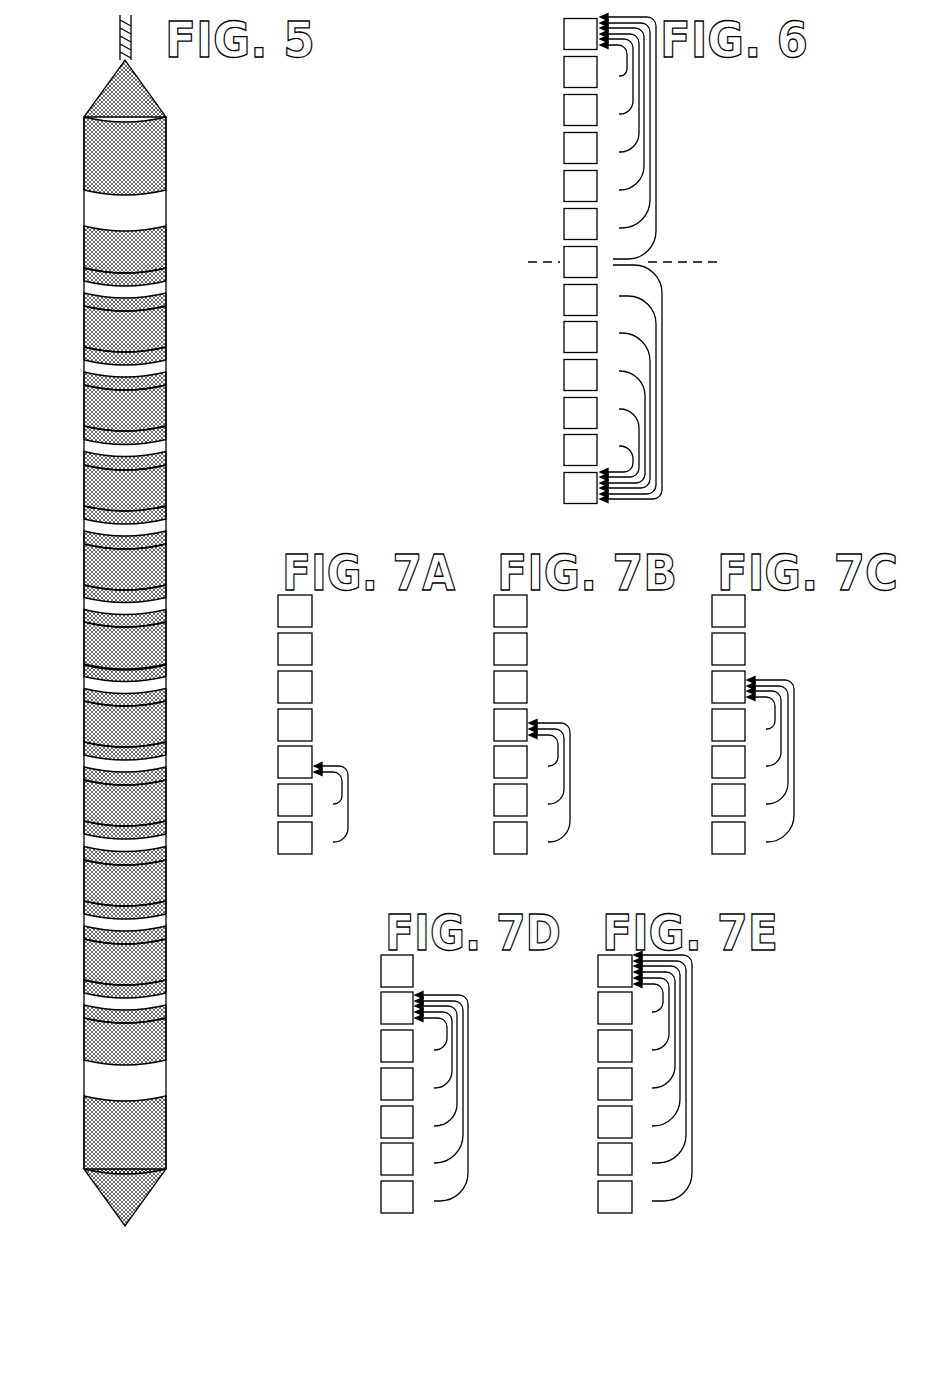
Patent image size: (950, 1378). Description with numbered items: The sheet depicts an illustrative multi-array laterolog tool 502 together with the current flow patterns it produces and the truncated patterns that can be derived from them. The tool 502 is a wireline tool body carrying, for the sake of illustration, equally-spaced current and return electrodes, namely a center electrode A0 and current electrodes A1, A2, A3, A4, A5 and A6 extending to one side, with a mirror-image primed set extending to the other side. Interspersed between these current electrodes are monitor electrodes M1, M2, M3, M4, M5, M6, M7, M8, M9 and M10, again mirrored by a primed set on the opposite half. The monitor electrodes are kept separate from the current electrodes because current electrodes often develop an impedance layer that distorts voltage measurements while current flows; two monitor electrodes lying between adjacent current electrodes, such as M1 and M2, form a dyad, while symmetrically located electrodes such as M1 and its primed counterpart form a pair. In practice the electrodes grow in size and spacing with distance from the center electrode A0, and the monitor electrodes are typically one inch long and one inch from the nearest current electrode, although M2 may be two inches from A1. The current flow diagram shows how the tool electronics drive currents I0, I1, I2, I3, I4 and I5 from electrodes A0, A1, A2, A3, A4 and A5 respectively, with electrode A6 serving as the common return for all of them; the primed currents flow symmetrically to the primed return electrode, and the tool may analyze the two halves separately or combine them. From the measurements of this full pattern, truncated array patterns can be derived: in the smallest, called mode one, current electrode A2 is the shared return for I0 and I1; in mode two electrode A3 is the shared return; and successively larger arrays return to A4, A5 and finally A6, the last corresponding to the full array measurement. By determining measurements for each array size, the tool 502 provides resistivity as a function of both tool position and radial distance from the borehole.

In FIG. 5, the multi-array laterolog tool 502 is at (90, 111).
In FIG. 5, the center electrode A0 is at (163, 644).
In FIG. 6, the center electrode A0 is at (580, 262).
In FIG. 7A, the center electrode A0 is at (295, 838).
In FIG. 7B, the center electrode A0 is at (510, 838).
In FIG. 7C, the center electrode A0 is at (728, 838).
In FIG. 7D, the center electrode A0 is at (397, 1197).
In FIG. 7E, the center electrode A0 is at (615, 1197).
In FIG. 5, the current electrode A1 is at (163, 564).
In FIG. 6, the current electrode A1 is at (580, 224).
In FIG. 7A, the current electrode A1 is at (295, 800).
In FIG. 7B, the current electrode A1 is at (510, 800).
In FIG. 7C, the current electrode A1 is at (728, 800).
In FIG. 7D, the current electrode A1 is at (397, 1159).
In FIG. 7E, the current electrode A1 is at (615, 1159).
In FIG. 5, the current electrode A2 is at (163, 484).
In FIG. 6, the current electrode A2 is at (580, 186).
In FIG. 7A, the current electrode A2 is at (295, 762).
In FIG. 7B, the current electrode A2 is at (510, 762).
In FIG. 7C, the current electrode A2 is at (728, 762).
In FIG. 7D, the current electrode A2 is at (397, 1122).
In FIG. 7E, the current electrode A2 is at (615, 1122).
In FIG. 5, the current electrode A3 is at (163, 404).
In FIG. 6, the current electrode A3 is at (580, 148).
In FIG. 7A, the current electrode A3 is at (295, 725).
In FIG. 7B, the current electrode A3 is at (510, 725).
In FIG. 7C, the current electrode A3 is at (728, 725).
In FIG. 7D, the current electrode A3 is at (397, 1084).
In FIG. 7E, the current electrode A3 is at (615, 1084).
In FIG. 5, the current electrode A4 is at (163, 324).
In FIG. 6, the current electrode A4 is at (580, 110).
In FIG. 7A, the current electrode A4 is at (295, 687).
In FIG. 7B, the current electrode A4 is at (510, 687).
In FIG. 7C, the current electrode A4 is at (728, 687).
In FIG. 7D, the current electrode A4 is at (397, 1046).
In FIG. 7E, the current electrode A4 is at (615, 1046).
In FIG. 5, the current electrode A5 is at (163, 244).
In FIG. 6, the current electrode A5 is at (580, 72).
In FIG. 7A, the current electrode A5 is at (295, 649).
In FIG. 7B, the current electrode A5 is at (510, 649).
In FIG. 7C, the current electrode A5 is at (728, 649).
In FIG. 7D, the current electrode A5 is at (397, 1008).
In FIG. 7E, the current electrode A5 is at (615, 1008).
In FIG. 5, the return electrode A6 is at (163, 164).
In FIG. 6, the return electrode A6 is at (580, 34).
In FIG. 7A, the return electrode A6 is at (295, 611).
In FIG. 7B, the return electrode A6 is at (510, 611).
In FIG. 7C, the return electrode A6 is at (728, 611).
In FIG. 7D, the return electrode A6 is at (397, 971).
In FIG. 7E, the return electrode A6 is at (615, 971).
In FIG. 5, the monitor electrode M1 is at (88, 617).
In FIG. 5, the monitor electrode M2 is at (88, 592).
In FIG. 5, the monitor electrode M3 is at (88, 539).
In FIG. 5, the monitor electrode M4 is at (88, 514).
In FIG. 5, the monitor electrode M5 is at (88, 459).
In FIG. 5, the monitor electrode M6 is at (88, 435).
In FIG. 5, the monitor electrode M7 is at (88, 380).
In FIG. 5, the monitor electrode M8 is at (88, 355).
In FIG. 5, the monitor electrode M9 is at (88, 301).
In FIG. 5, the monitor electrode M10 is at (88, 276).
In FIG. 6, the current I0 is at (628, 138).
In FIG. 7A, the current I0 is at (331, 808).
In FIG. 7B, the current I0 is at (549, 787).
In FIG. 7C, the current I0 is at (770, 765).
In FIG. 7D, the current I0 is at (441, 1102).
In FIG. 7E, the current I0 is at (663, 1082).
In FIG. 6, the current I1 is at (625, 130).
In FIG. 7A, the current I1 is at (328, 792).
In FIG. 7B, the current I1 is at (546, 771).
In FIG. 7C, the current I1 is at (767, 749).
In FIG. 7D, the current I1 is at (439, 1086).
In FIG. 7E, the current I1 is at (660, 1066).
In FIG. 6, the current I2 is at (622, 113).
In FIG. 7B, the current I2 is at (543, 755).
In FIG. 7C, the current I2 is at (764, 733).
In FIG. 7D, the current I2 is at (436, 1070).
In FIG. 7E, the current I2 is at (657, 1050).
In FIG. 6, the current I3 is at (619, 97).
In FIG. 7C, the current I3 is at (761, 717).
In FIG. 7D, the current I3 is at (433, 1054).
In FIG. 7E, the current I3 is at (654, 1034).
In FIG. 6, the current I4 is at (616, 81).
In FIG. 7D, the current I4 is at (431, 1038).
In FIG. 7E, the current I4 is at (651, 1018).
In FIG. 6, the current I5 is at (613, 65).
In FIG. 7E, the current I5 is at (648, 1002).